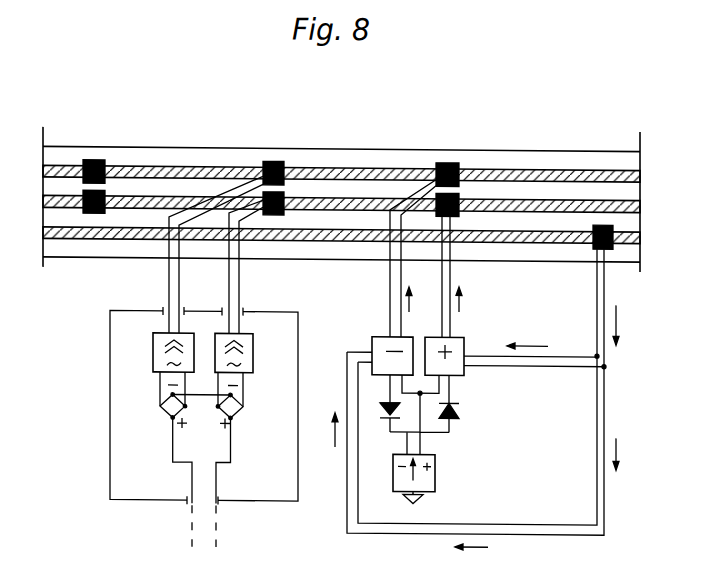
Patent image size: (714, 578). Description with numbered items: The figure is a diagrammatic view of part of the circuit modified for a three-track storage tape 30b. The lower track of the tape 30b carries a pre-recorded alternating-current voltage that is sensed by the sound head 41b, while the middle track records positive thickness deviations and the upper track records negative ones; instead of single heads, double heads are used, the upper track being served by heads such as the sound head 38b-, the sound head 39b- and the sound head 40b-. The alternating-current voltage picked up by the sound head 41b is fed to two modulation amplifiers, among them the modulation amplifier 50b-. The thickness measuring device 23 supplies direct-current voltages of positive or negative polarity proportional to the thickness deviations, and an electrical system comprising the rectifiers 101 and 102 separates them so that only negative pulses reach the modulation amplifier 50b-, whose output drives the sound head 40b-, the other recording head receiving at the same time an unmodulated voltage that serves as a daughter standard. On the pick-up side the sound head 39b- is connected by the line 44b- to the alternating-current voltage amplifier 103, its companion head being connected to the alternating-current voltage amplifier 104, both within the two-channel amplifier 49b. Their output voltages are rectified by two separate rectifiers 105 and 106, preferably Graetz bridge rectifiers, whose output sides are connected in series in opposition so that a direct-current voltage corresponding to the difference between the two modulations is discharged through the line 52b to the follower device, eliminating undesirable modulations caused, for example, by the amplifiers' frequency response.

The tape 30b is at (335, 152).
The sound head 38b- is at (97, 157).
The sound head 39b- is at (275, 160).
The sound head 40b- is at (448, 158).
The sound head 41b is at (613, 250).
The line 44b- is at (180, 260).
The two-channel amplifier 49b is at (140, 502).
The line 52b is at (192, 530).
The alternating-current voltage amplifier 103 is at (153, 350).
The alternating-current voltage amplifier 104 is at (253, 350).
The rectifier 105 is at (168, 414).
The rectifier 106 is at (239, 413).
The modulation amplifier 50b- is at (382, 336).
The rectifier 101 is at (380, 408).
The rectifier 102 is at (460, 408).
The thickness measuring device 23 is at (425, 474).